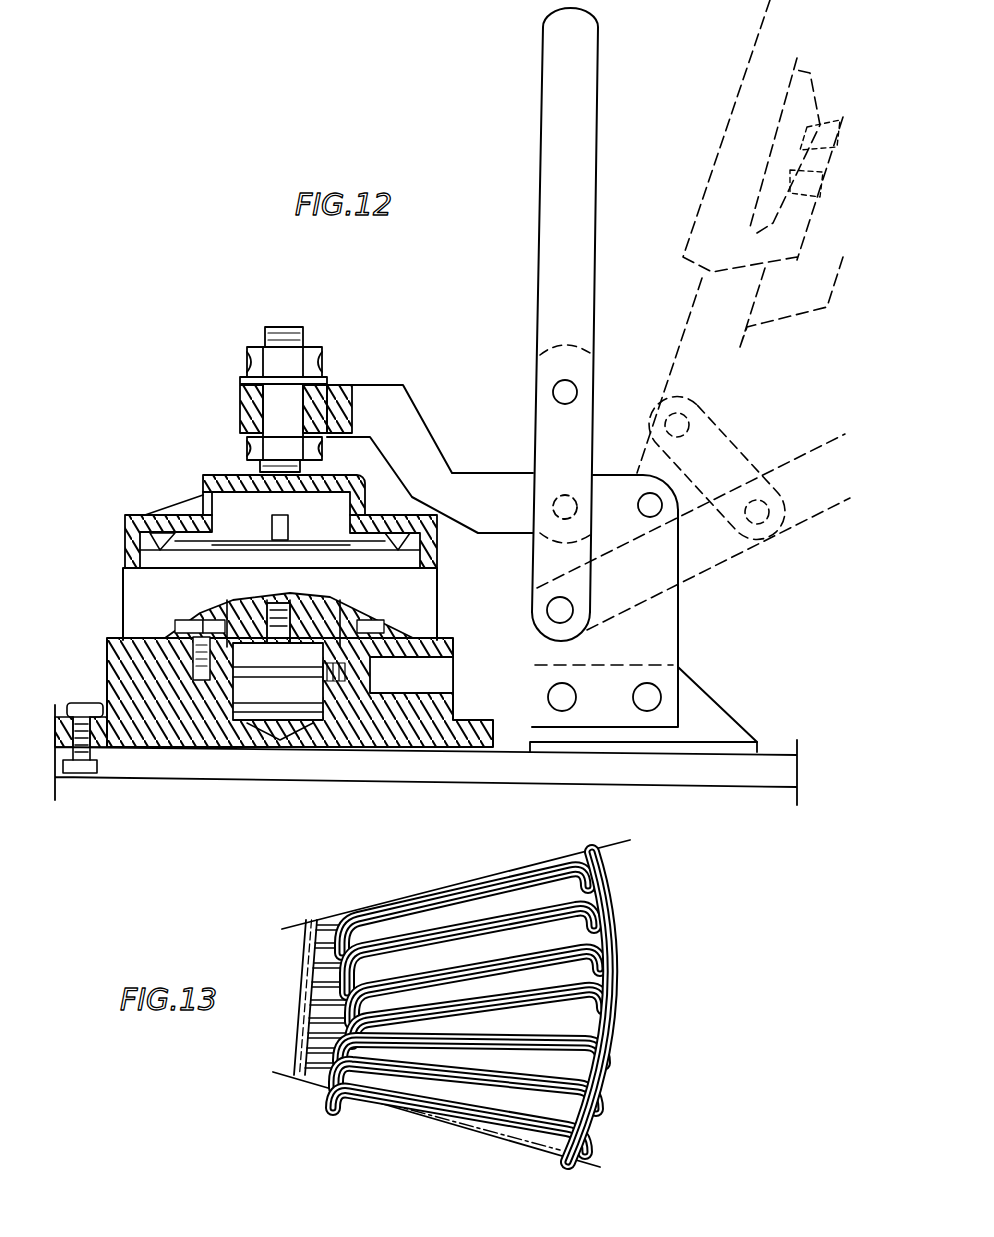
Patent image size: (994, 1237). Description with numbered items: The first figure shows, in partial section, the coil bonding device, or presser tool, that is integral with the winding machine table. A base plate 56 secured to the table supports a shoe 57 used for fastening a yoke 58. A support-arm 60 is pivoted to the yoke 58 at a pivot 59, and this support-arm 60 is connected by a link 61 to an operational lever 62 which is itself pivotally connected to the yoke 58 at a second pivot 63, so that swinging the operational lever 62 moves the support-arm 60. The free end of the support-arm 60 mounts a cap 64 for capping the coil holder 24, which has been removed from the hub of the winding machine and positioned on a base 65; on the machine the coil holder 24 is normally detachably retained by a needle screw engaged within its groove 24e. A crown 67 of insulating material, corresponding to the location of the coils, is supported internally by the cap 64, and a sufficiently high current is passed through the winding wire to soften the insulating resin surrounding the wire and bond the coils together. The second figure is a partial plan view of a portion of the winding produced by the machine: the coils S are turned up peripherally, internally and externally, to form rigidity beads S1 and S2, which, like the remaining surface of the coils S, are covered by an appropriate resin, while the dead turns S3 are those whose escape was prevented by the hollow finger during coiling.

In FIG. 12, the coil holder 24 is at (145, 602).
In FIG. 12, the groove 24e is at (262, 663).
In FIG. 12, the base plate 56 is at (765, 775).
In FIG. 12, the shoe 57 is at (698, 702).
In FIG. 12, the yoke 58 is at (663, 630).
In FIG. 12, the pivot 59 is at (652, 512).
In FIG. 12, the support-arm 60 is at (480, 482).
In FIG. 12, the link 61 is at (650, 432).
In FIG. 12, the operational lever 62 is at (550, 295).
In FIG. 12, the pivot 63 is at (553, 606).
In FIG. 12, the cap 64 is at (172, 507).
In FIG. 12, the base 65 is at (110, 688).
In FIG. 12, the crown 67 is at (214, 514).
In FIG. 13, the coils S is at (648, 897).
In FIG. 13, the rigidity bead S1 is at (345, 1095).
In FIG. 13, the rigidity bead S2 is at (620, 1030).
In FIG. 13, the dead turns S3 is at (303, 997).